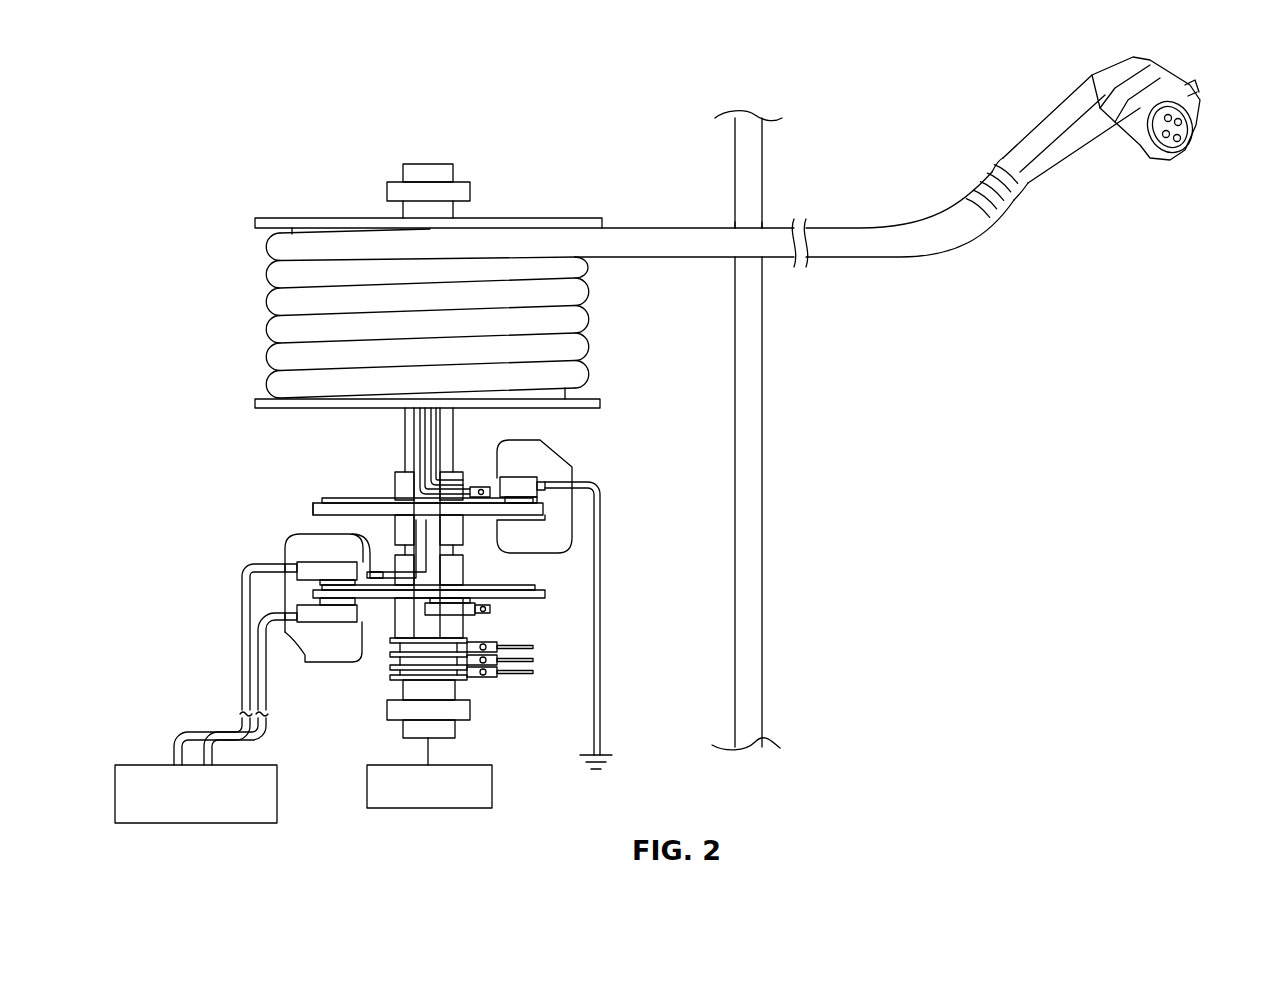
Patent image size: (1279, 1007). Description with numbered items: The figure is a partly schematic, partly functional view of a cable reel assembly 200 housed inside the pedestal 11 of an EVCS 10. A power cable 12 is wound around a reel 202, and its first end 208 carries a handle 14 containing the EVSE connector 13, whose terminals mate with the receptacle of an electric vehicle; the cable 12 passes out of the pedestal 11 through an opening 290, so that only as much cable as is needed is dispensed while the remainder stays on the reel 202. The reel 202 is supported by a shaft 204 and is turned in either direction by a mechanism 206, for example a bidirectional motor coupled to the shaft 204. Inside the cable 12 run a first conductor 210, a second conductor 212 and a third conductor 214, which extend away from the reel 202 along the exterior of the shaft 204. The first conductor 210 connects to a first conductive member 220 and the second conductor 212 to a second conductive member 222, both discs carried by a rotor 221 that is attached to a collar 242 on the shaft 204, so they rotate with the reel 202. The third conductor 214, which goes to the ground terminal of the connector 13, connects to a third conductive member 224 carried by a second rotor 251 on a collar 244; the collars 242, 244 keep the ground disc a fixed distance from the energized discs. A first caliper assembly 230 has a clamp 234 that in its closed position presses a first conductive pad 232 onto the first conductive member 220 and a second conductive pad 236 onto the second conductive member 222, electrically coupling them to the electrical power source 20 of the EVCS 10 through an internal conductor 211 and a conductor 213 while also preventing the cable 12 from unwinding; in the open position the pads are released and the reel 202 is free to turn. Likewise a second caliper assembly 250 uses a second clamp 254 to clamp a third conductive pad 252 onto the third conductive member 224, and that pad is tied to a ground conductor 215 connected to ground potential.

The EVCS 10 is at (797, 403).
The pedestal 11 is at (757, 668).
The power cable 12 is at (340, 243).
The EVSE connector 13 is at (1200, 130).
The handle 14 is at (1120, 181).
The electrical power source 20 is at (278, 795).
The cable reel assembly 200 is at (605, 236).
The reel 202 is at (553, 222).
The shaft 204 is at (435, 167).
The mechanism 206 is at (444, 797).
The end of the cable 208 is at (978, 242).
The first conductor 210 is at (418, 460).
The internal conductor 211 is at (245, 692).
The second conductor 212 is at (420, 432).
The conductor 213 is at (267, 695).
The third conductor 214 is at (438, 438).
The ground conductor 215 is at (597, 525).
The first conductive member 220 is at (370, 560).
The rotor 221 is at (543, 595).
The second conductive member 222 is at (523, 603).
The third conductive member 224 is at (355, 500).
The first caliper assembly 230 is at (269, 614).
The first conductive pad 232 is at (322, 578).
The clamp 234 is at (318, 650).
The second conductive pad 236 is at (322, 597).
The collar 242 is at (452, 628).
The collar 244 is at (457, 530).
The second caliper assembly 250 is at (586, 484).
The second rotor 251 is at (322, 510).
The third conductive pad 252 is at (553, 498).
The second clamp 254 is at (543, 448).
The opening 290 is at (767, 225).